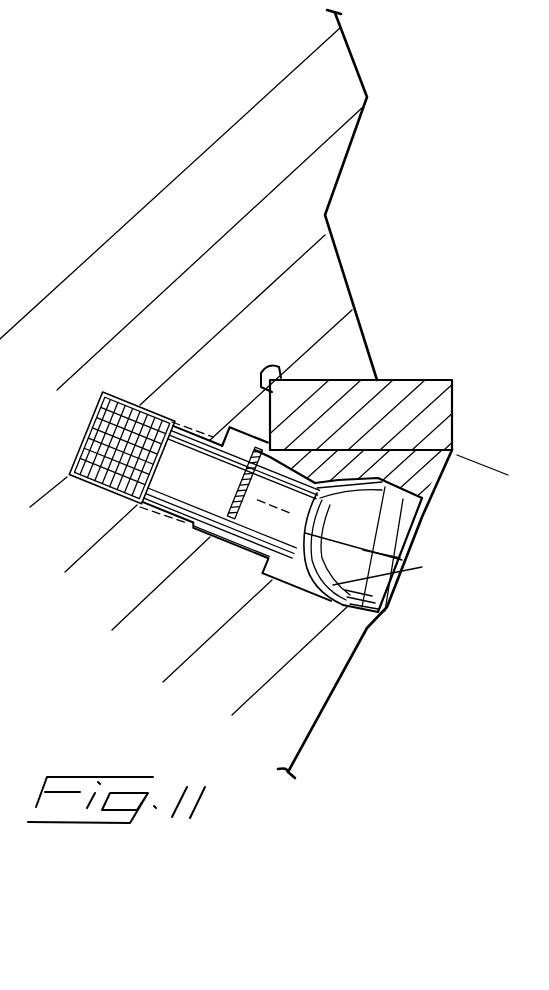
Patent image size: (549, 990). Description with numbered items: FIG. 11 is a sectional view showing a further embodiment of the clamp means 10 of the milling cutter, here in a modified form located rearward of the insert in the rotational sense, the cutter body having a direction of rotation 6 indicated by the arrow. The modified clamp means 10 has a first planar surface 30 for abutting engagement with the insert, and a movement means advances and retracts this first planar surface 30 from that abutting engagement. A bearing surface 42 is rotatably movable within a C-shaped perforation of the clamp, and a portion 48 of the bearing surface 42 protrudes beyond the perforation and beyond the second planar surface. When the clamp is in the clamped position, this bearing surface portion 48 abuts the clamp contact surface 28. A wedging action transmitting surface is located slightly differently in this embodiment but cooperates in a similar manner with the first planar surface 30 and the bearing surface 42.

The direction of rotation 6 is at (447, 292).
The clamp means 10 is at (413, 394).
The clamp contact surface 28 is at (367, 617).
The first planar surface 30 is at (430, 462).
The bearing surface 42 is at (383, 549).
The bearing surface portion 48 is at (376, 569).